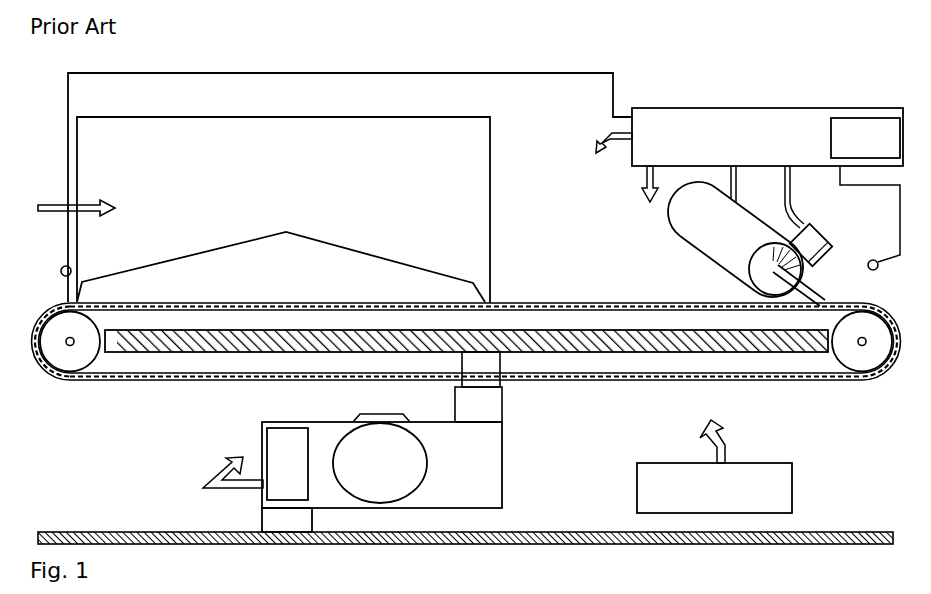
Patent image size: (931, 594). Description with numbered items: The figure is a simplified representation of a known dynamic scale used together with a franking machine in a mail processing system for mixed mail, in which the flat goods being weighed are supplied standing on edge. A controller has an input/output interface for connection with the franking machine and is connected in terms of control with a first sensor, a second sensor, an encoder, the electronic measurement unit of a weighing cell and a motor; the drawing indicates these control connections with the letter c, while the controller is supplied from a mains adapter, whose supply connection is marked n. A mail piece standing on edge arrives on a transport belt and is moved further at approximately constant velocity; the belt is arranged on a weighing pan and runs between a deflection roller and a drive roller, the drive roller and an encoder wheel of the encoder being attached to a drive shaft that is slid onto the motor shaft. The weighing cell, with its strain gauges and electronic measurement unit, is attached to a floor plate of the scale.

The control signal c is at (417, 310).
The mains supply n is at (683, 314).